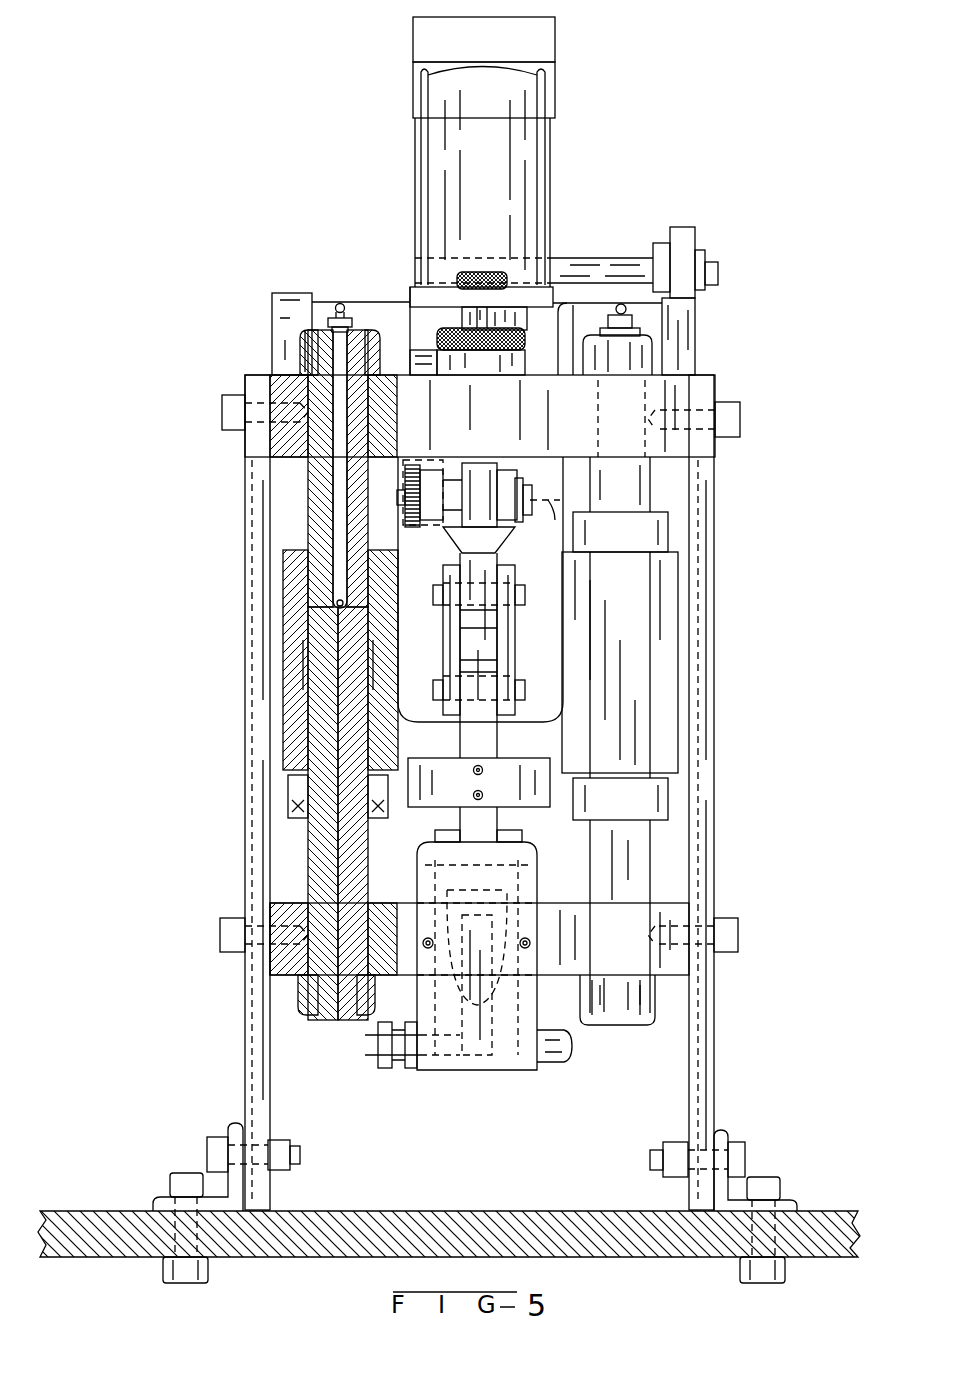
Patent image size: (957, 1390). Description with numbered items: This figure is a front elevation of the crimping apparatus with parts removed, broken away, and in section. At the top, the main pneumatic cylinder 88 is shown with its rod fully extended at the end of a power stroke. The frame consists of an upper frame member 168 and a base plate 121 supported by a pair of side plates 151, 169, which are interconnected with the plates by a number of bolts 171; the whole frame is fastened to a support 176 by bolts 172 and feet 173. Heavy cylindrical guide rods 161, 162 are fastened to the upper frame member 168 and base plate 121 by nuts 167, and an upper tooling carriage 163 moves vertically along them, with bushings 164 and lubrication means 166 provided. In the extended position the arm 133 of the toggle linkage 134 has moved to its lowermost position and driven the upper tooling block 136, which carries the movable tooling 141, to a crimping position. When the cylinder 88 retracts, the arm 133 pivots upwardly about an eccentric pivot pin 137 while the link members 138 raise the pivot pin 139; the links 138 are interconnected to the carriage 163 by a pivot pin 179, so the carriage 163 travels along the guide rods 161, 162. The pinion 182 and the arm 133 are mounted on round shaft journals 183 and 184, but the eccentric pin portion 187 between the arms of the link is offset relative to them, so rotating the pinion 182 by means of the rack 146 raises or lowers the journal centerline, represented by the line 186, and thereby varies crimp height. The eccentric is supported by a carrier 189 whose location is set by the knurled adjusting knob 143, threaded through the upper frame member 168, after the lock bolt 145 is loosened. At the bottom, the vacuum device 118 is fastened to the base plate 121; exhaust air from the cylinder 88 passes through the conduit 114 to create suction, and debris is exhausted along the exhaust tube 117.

The main pneumatic cylinder 88 is at (540, 146).
The lock bolt 145 is at (482, 272).
The adjusting knob 143 is at (440, 340).
The lubrication means 166 is at (340, 300).
The nuts 167 is at (305, 355).
The upper frame member 168 is at (665, 385).
The bolts 171 is at (232, 412).
The guide rod 162 is at (312, 490).
The shaft journal 183 is at (415, 470).
The rack 146 is at (425, 480).
The eccentric pin portion 187 is at (478, 465).
The carrier 189 is at (500, 490).
The shaft journal 184 is at (517, 478).
The eccentric pivot pin 137 is at (532, 490).
The center line of shaft journals 186 is at (548, 522).
The guide rod 161 is at (650, 490).
The pinion 182 is at (412, 527).
The arm 133 is at (495, 556).
The bushings 164 is at (292, 625).
The toggle linkage 134 is at (438, 598).
The pivot pin 139 is at (525, 590).
The link members 138 is at (447, 643).
The pivot pin 179 is at (542, 680).
The upper tooling carriage 163 is at (678, 668).
The upper tooling block 136 is at (527, 770).
The movable tooling 141 is at (505, 815).
The base plate 121 is at (672, 912).
The side plate 151 is at (245, 985).
The side plate 169 is at (708, 1050).
The conduit 114 is at (374, 1058).
The vacuum device 118 is at (475, 1072).
The exhaust tube 117 is at (548, 1062).
The bolts 172 is at (207, 1152).
The feet 173 is at (155, 1200).
The support 176 is at (492, 1209).